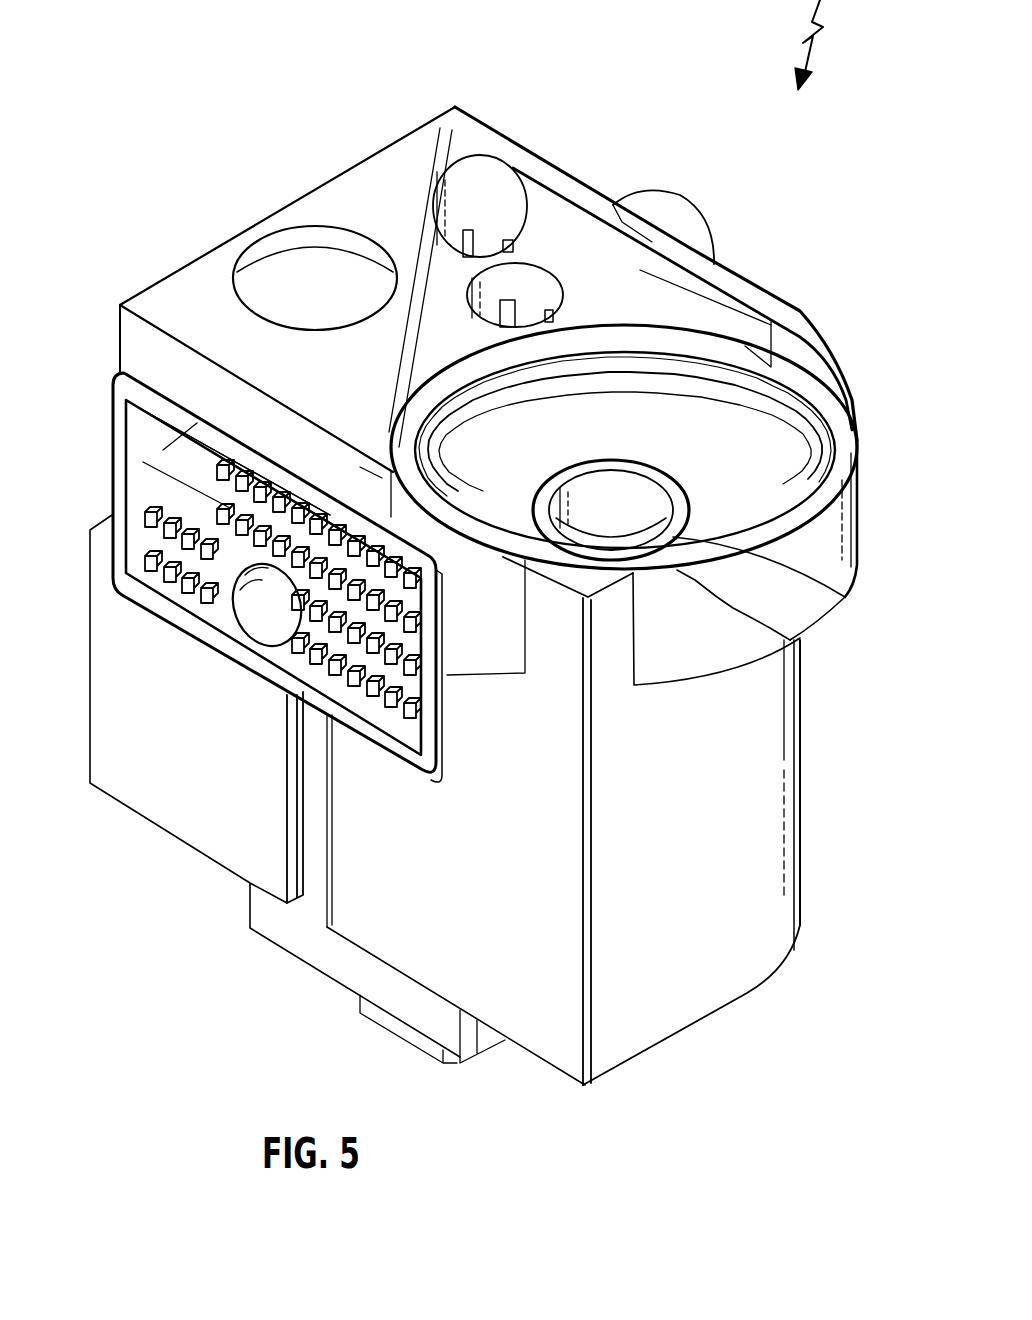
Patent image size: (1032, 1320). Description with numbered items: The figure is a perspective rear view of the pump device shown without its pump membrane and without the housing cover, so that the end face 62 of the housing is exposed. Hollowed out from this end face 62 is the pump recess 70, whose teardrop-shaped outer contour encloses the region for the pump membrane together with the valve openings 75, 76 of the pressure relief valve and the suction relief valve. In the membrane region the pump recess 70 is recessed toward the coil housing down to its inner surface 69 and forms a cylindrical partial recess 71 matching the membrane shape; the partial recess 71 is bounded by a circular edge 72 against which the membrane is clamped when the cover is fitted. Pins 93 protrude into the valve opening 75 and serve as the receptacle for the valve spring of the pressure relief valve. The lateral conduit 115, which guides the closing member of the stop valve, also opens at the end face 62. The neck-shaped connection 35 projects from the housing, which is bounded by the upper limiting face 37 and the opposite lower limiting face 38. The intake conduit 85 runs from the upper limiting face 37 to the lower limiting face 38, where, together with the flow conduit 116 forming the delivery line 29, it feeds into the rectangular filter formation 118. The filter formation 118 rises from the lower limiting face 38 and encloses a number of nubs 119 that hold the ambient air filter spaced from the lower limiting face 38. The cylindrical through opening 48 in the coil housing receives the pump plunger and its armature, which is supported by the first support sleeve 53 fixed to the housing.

The delivery line 29 is at (173, 470).
The flow conduit 116 is at (236, 462).
The connection 35 is at (673, 217).
The upper limiting face 37 is at (557, 167).
The lower limiting face 38 is at (528, 968).
The through opening 48 is at (800, 652).
The first support sleeve 53 is at (836, 590).
The end face 62 is at (217, 323).
The inner surface 69 is at (706, 459).
The pump recess 70 is at (652, 317).
The partial recess 71 is at (740, 491).
The circular edge 72 is at (680, 377).
The valve opening 75 is at (462, 183).
The valve opening 76 is at (487, 300).
The intake conduit 85 is at (268, 614).
The pins 93 is at (473, 230).
The lateral conduit 115 is at (277, 277).
The filter formation 118 is at (133, 491).
The nubs 119 is at (355, 690).